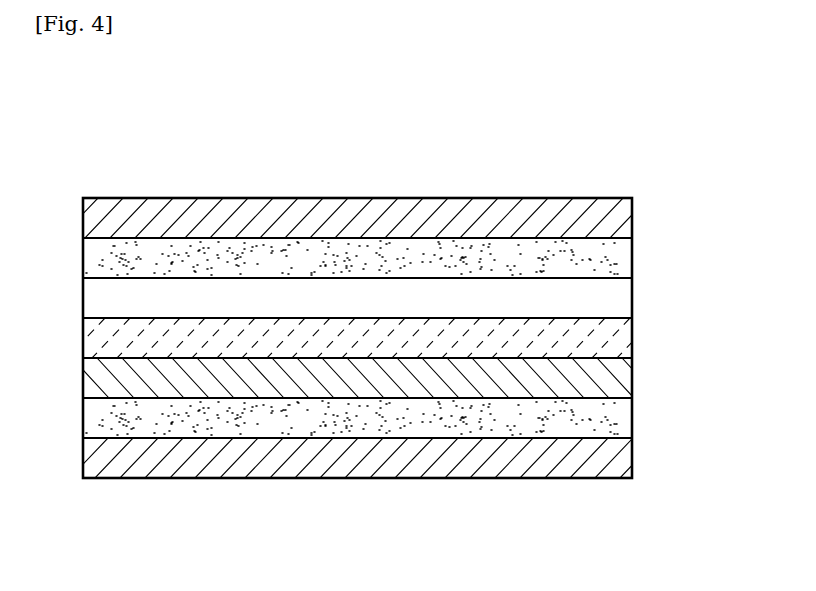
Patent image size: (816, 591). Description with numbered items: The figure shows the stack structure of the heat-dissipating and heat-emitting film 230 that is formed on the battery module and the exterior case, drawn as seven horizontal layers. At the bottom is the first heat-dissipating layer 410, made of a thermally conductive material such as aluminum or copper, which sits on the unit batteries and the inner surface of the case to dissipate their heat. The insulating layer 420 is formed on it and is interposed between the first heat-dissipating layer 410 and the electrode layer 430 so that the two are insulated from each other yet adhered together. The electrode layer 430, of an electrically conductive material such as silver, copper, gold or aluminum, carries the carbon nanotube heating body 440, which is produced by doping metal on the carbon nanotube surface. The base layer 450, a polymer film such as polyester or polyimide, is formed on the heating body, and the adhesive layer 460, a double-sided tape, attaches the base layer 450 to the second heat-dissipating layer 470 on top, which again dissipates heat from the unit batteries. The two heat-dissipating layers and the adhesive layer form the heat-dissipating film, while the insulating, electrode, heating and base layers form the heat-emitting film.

The heat-dissipating and heat-emitting film 230 is at (137, 108).
The first heat-dissipating layer 410 is at (632, 458).
The insulating layer 420 is at (632, 418).
The electrode layer 430 is at (632, 378).
The carbon nanotube heating body 440 is at (632, 338).
The base layer 450 is at (632, 298).
The adhesive layer 460 is at (632, 258).
The second heat-dissipating layer 470 is at (632, 218).